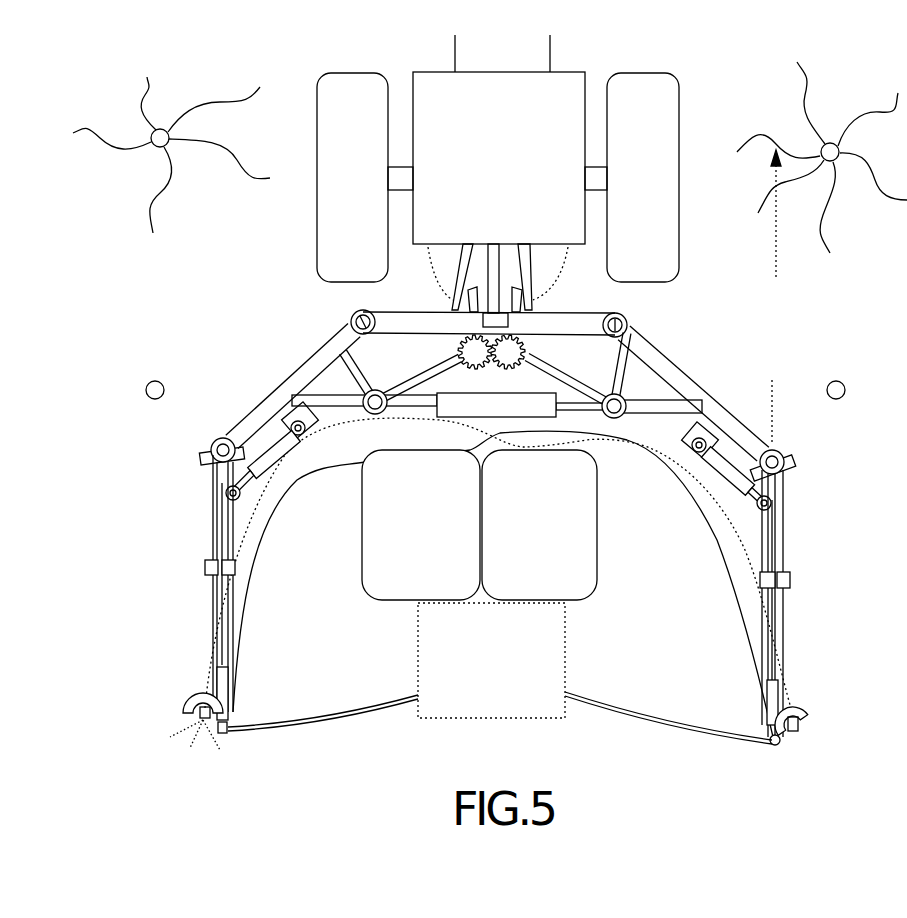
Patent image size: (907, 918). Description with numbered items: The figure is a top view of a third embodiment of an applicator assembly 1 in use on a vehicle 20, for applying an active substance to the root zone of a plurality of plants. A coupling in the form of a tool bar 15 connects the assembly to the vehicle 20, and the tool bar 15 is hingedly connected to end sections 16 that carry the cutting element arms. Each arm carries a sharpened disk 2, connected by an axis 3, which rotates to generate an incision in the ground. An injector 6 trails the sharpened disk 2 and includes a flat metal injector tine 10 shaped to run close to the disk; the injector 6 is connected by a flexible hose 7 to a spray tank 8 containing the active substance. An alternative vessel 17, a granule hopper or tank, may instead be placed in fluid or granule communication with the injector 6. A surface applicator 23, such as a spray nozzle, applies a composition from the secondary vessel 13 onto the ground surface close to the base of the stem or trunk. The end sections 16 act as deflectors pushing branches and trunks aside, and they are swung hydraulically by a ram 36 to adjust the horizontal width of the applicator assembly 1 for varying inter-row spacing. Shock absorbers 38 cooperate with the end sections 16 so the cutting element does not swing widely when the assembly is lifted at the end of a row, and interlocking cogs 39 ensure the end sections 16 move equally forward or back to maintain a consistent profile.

The applicator assembly 1 is at (211, 389).
The sharpened disk 2 is at (225, 527).
The axis 3 is at (230, 567).
The injector 6 is at (222, 683).
The flexible hose 7 is at (245, 605).
The spray tank 8 is at (383, 578).
The injector tine 10 is at (223, 733).
The secondary vessel 13 is at (580, 580).
The tool bar 15 is at (578, 318).
The end sections 16 is at (300, 385).
The alternative vessel 17 is at (487, 700).
The vehicle 20 is at (565, 83).
The surface applicator 23 is at (205, 725).
The ram 36 is at (455, 407).
The shock absorbers 38 is at (282, 452).
The interlocking cogs 39 is at (510, 352).